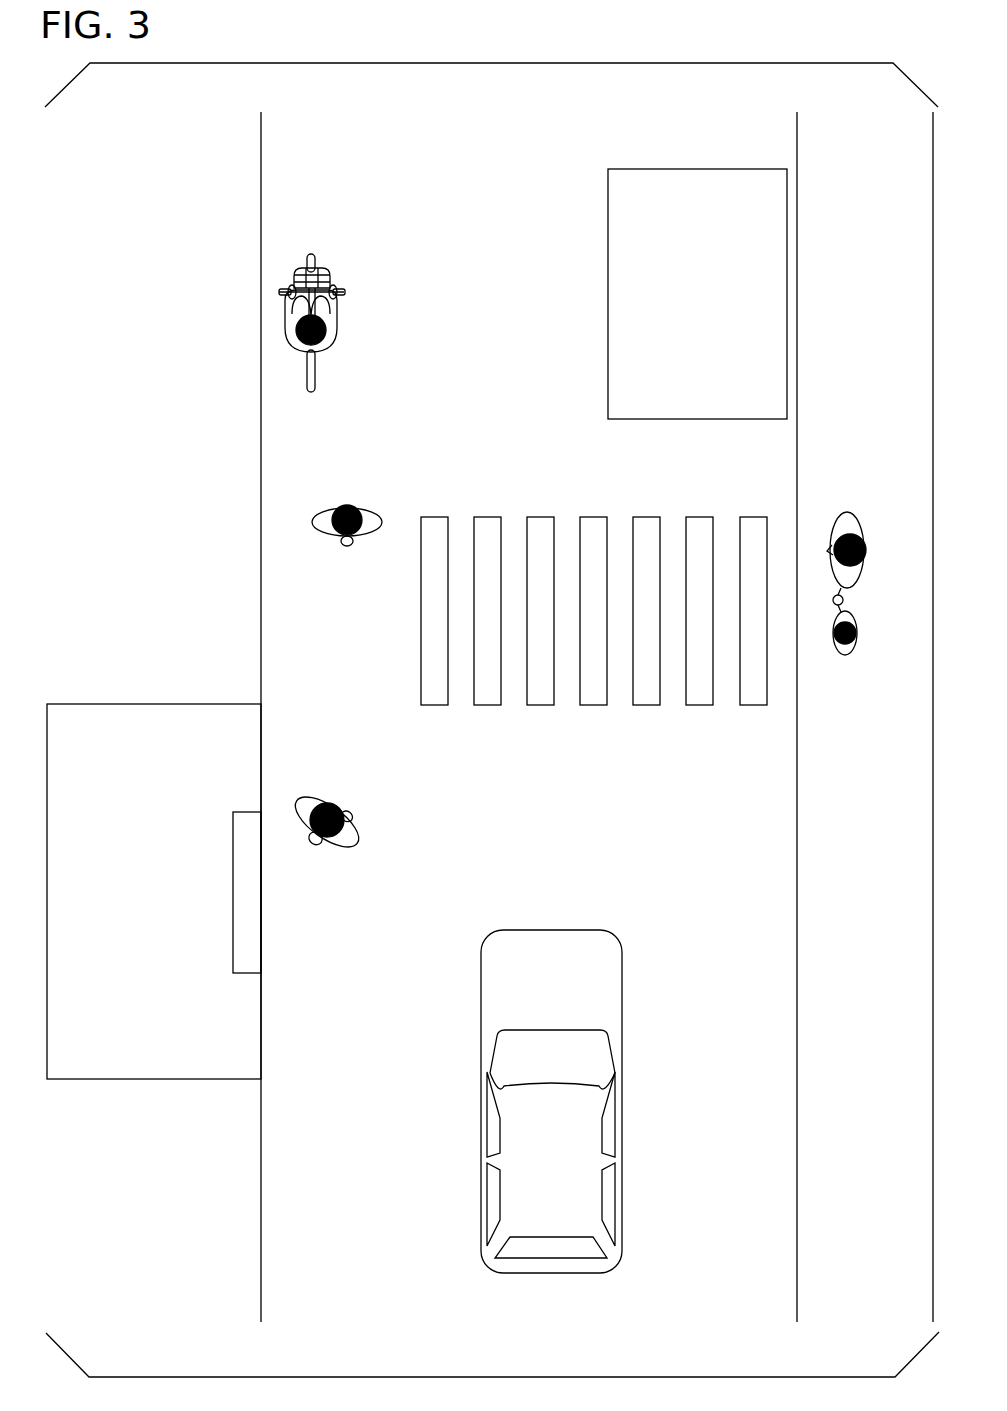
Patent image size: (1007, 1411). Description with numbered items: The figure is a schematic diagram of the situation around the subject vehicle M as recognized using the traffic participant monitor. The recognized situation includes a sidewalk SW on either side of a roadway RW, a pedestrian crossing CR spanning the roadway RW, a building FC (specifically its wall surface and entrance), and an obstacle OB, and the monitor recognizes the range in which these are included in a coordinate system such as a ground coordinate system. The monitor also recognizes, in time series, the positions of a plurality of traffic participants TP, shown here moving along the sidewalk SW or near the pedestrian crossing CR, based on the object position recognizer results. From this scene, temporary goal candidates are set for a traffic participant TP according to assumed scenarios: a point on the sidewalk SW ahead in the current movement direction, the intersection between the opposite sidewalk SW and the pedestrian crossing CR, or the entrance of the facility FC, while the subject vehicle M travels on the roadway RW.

The sidewalk SW is at (345, 146).
The roadway RW is at (517, 310).
The obstacle OB is at (712, 310).
The building (facility) FC is at (168, 910).
The pedestrian crossing CR is at (528, 496).
The traffic participant TP is at (311, 252).
The subject vehicle M is at (550, 930).